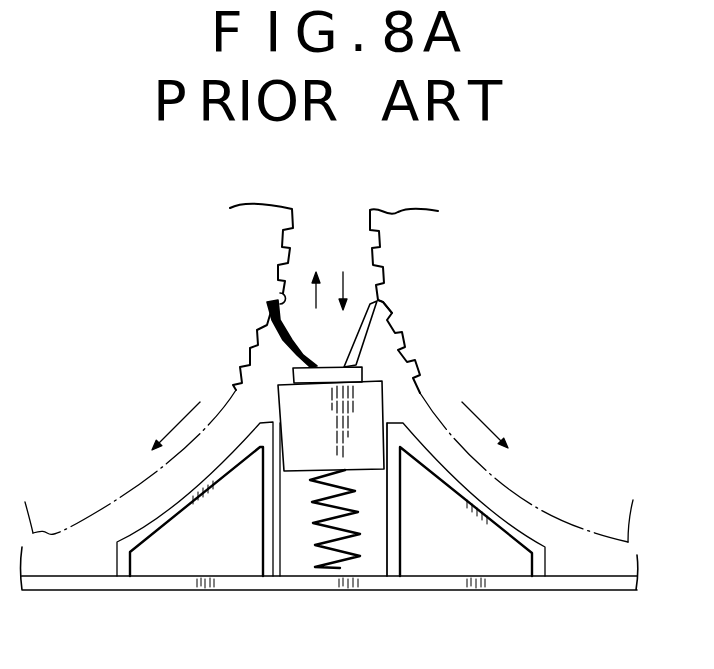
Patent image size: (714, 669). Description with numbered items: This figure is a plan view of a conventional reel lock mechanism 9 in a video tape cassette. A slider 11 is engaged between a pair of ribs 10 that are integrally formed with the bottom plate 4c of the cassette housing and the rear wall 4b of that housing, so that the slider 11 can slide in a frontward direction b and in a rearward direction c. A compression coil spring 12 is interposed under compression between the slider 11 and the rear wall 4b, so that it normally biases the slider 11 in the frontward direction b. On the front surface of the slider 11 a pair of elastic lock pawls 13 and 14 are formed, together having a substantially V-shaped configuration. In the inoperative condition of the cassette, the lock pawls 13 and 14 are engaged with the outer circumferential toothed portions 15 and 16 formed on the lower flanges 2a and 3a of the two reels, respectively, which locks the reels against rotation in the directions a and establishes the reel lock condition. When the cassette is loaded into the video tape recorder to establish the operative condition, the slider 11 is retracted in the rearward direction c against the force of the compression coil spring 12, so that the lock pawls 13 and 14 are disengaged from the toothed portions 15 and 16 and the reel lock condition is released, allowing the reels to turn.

The lower flange 2a is at (243, 238).
The lower flange 3a is at (410, 232).
The rear wall 4b is at (185, 592).
The bottom plate 4c is at (370, 553).
The reel lock mechanism 9 is at (389, 405).
The ribs 10 is at (262, 533).
The slider 11 is at (291, 409).
The compression coil spring 12 is at (328, 552).
The elastic lock pawl 13 is at (284, 343).
The elastic lock pawl 14 is at (368, 347).
The outer circumferential toothed portion 15 is at (278, 291).
The outer circumferential toothed portion 16 is at (383, 302).
The reel rotation direction a is at (173, 430).
The frontward direction b is at (302, 297).
The rearward direction c is at (343, 287).